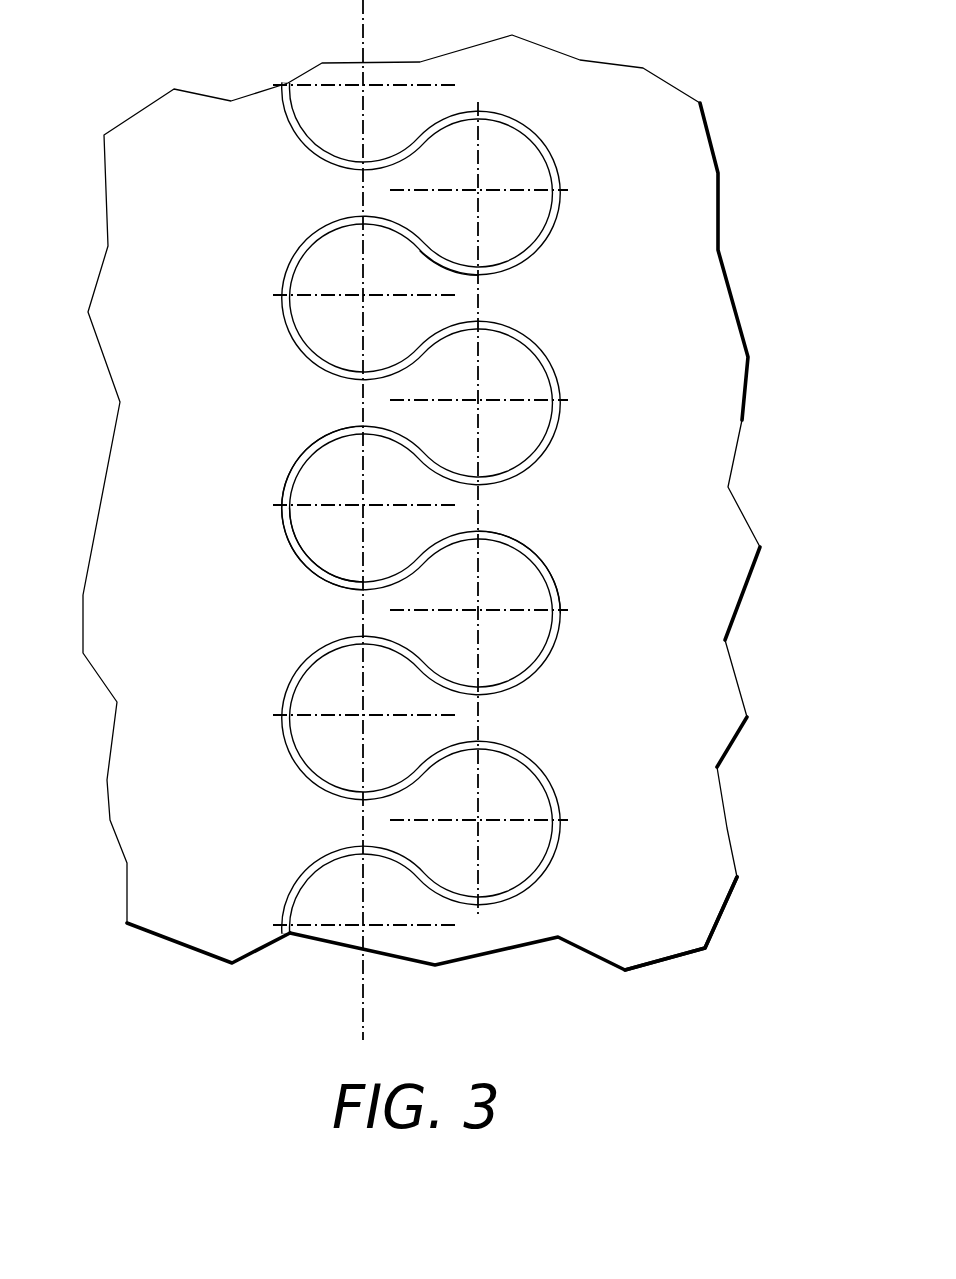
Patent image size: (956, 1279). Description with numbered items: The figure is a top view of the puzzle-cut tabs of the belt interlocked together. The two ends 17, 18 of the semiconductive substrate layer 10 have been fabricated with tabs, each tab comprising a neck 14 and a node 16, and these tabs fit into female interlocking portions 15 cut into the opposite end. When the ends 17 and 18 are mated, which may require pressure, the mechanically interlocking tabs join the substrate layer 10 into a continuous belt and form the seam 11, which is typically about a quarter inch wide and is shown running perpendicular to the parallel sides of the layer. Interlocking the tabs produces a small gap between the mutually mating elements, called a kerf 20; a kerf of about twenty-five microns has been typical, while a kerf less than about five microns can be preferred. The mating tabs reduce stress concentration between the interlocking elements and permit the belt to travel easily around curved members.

The semiconductive substrate layer 10 is at (718, 318).
The seam 11 is at (566, 354).
The neck 14 is at (475, 295).
The female interlocking portions 15 is at (295, 462).
The node 16 is at (317, 558).
The end 17 is at (208, 927).
The end 18 is at (672, 927).
The kerf 20 is at (533, 552).